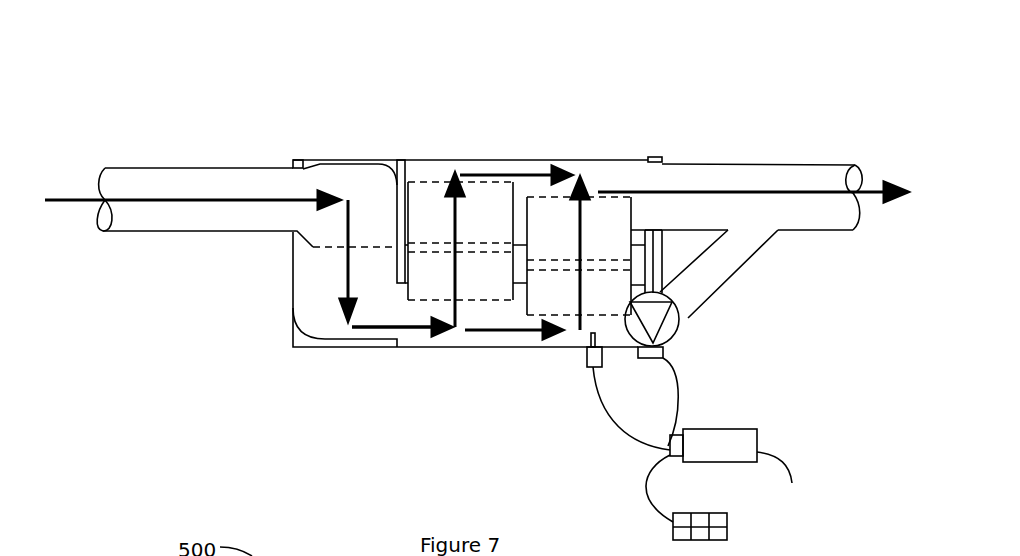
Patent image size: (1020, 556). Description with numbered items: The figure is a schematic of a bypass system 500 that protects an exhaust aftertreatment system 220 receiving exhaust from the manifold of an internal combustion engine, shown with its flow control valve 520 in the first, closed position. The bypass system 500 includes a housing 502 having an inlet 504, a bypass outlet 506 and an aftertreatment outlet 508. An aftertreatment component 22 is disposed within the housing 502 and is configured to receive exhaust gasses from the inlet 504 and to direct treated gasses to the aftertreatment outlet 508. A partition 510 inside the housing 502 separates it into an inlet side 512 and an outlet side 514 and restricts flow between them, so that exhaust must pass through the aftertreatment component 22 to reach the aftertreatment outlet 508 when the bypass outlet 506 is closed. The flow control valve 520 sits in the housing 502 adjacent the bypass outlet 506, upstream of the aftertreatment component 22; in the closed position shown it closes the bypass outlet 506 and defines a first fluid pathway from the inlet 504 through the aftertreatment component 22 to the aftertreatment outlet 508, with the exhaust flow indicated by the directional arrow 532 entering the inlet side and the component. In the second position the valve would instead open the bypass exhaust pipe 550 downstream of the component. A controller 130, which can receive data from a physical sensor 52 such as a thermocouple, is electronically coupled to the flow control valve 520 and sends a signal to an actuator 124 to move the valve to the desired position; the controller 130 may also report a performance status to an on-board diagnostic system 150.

The bypass system 500 is at (306, 72).
The directional arrow 532 is at (188, 197).
The inlet 504 is at (302, 159).
The partition 510 is at (400, 159).
The aftertreatment component 22 is at (432, 181).
The outlet side 514 is at (580, 175).
The aftertreatment outlet 508 is at (652, 157).
The bypass exhaust pipe 550 is at (740, 270).
The bypass outlet 506 is at (690, 318).
The flow control valve 520 is at (670, 331).
The actuator 124 is at (641, 360).
The controller 130 is at (778, 424).
The on-board diagnostic system 150 is at (733, 496).
The physical sensor 52 is at (585, 358).
The inlet side 512 is at (493, 317).
The housing 502 is at (398, 347).
The exhaust aftertreatment system 220 is at (316, 368).